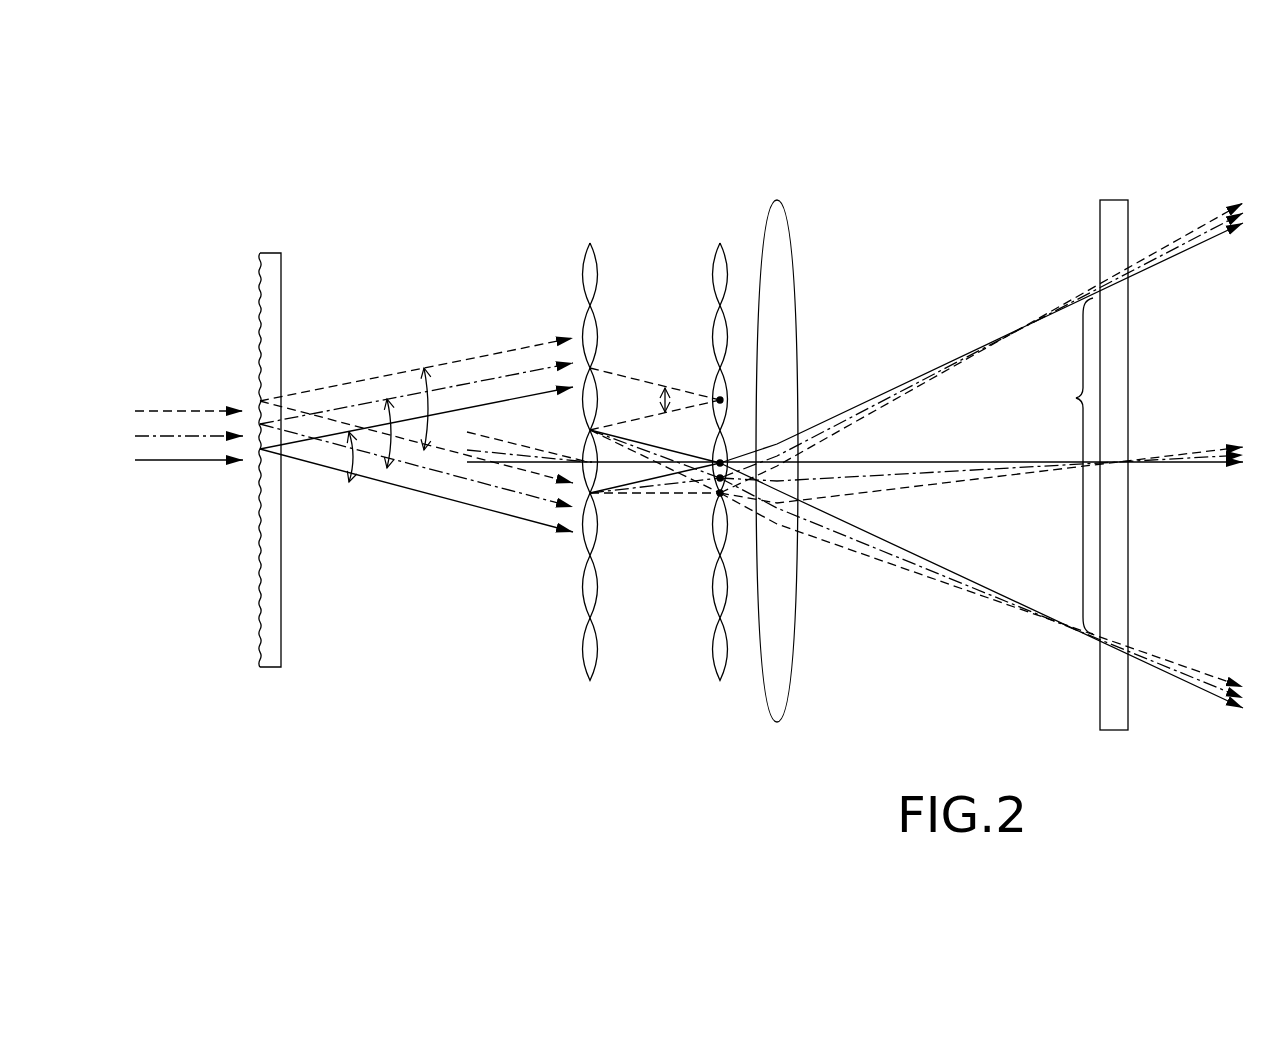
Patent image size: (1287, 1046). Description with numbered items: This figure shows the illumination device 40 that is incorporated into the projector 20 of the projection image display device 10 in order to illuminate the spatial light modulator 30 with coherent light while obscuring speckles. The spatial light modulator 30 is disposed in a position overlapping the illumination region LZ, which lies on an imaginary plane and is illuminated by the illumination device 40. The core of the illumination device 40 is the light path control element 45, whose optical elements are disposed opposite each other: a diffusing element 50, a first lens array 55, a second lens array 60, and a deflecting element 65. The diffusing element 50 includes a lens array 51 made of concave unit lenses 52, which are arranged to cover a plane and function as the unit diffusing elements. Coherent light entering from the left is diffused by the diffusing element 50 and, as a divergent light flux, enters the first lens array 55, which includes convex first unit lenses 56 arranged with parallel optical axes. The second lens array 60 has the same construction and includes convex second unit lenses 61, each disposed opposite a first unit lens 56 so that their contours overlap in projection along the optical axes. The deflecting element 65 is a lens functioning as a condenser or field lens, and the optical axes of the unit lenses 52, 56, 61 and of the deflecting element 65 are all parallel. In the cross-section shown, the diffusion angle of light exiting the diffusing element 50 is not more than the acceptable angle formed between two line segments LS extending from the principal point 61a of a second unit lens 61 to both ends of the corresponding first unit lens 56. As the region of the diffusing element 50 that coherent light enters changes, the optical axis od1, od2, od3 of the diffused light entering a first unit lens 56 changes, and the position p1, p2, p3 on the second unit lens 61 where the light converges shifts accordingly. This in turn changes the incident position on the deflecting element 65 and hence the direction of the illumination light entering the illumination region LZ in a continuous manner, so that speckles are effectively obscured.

The projection image display device 10 is at (960, 152).
The projector 20 is at (689, 458).
The spatial light modulator 30 is at (1107, 183).
The illumination device 40 is at (800, 183).
The light path control element 45 is at (651, 736).
The diffusing element 50 is at (263, 688).
The lens array 51 is at (232, 460).
The concave unit lenses 52 is at (259, 580).
The first lens array 55 is at (583, 689).
The first unit lenses 56 is at (586, 542).
The second lens array 60 is at (717, 689).
The second unit lenses 61 is at (716, 542).
The principal point 61a is at (718, 399).
The deflecting element 65 is at (790, 724).
The convergence position p1 is at (723, 461).
The convergence position p2 is at (725, 477).
The convergence position p3 is at (725, 495).
The optical axis of diffused light od1 is at (523, 463).
The optical axis of diffused light od2 is at (487, 454).
The optical axis of diffused light od3 is at (490, 434).
The line segments LS is at (618, 373).
The illumination region LZ is at (1066, 466).